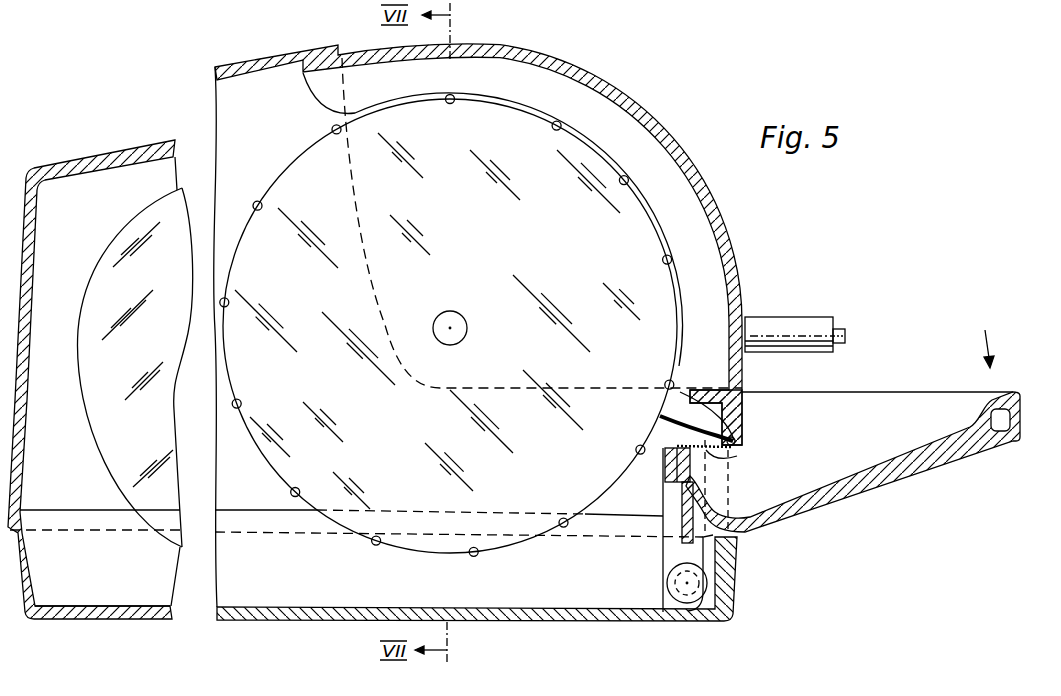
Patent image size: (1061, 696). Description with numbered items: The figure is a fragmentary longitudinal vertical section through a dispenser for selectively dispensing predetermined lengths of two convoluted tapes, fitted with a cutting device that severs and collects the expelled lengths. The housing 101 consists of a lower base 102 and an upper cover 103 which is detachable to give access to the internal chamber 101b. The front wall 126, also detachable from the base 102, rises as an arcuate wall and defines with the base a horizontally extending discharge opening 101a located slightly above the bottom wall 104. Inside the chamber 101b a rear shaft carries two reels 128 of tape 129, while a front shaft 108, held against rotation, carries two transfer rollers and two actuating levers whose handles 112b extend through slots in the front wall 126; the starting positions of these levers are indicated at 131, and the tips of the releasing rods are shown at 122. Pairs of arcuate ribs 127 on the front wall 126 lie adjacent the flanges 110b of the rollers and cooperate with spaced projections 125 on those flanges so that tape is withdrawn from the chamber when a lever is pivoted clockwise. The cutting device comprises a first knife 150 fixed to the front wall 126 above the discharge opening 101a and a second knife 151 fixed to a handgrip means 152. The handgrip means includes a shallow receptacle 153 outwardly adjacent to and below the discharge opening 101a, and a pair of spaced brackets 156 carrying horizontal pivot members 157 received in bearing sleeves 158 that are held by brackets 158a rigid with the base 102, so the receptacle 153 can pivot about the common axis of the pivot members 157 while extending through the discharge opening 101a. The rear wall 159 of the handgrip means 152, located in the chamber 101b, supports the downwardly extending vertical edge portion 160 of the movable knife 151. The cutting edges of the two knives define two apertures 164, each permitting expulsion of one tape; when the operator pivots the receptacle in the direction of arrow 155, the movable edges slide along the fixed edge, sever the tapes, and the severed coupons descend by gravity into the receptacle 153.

The housing 101 is at (100, 367).
The discharge opening 101a is at (733, 486).
The internal chamber 101b is at (90, 212).
The base 102 is at (28, 577).
The cover 103 is at (251, 60).
The bottom wall 104 is at (502, 621).
The front shaft 108 is at (460, 322).
The flange 110b is at (447, 326).
The handle 112b is at (810, 326).
The tip of releasing rod 122 is at (846, 329).
The projections 125 is at (235, 410).
The front wall 126 is at (497, 234).
The arcuate ribs 127 is at (478, 234).
The reel 128 is at (118, 367).
The tape 129 is at (87, 357).
The starting position of lever 131 is at (817, 313).
The first knife 150 is at (738, 416).
The second knife 151 is at (663, 416).
The handgrip means 152 is at (1016, 391).
The receptacle 153 is at (864, 441).
The arrow 155 is at (983, 343).
The brackets 156 is at (499, 592).
The pivot members 157 is at (697, 600).
The bearing sleeves 158 is at (653, 603).
The brackets 158a is at (665, 605).
The rear wall 159 is at (663, 470).
The vertical edge portion 160 is at (638, 495).
The apertures 164 is at (730, 461).